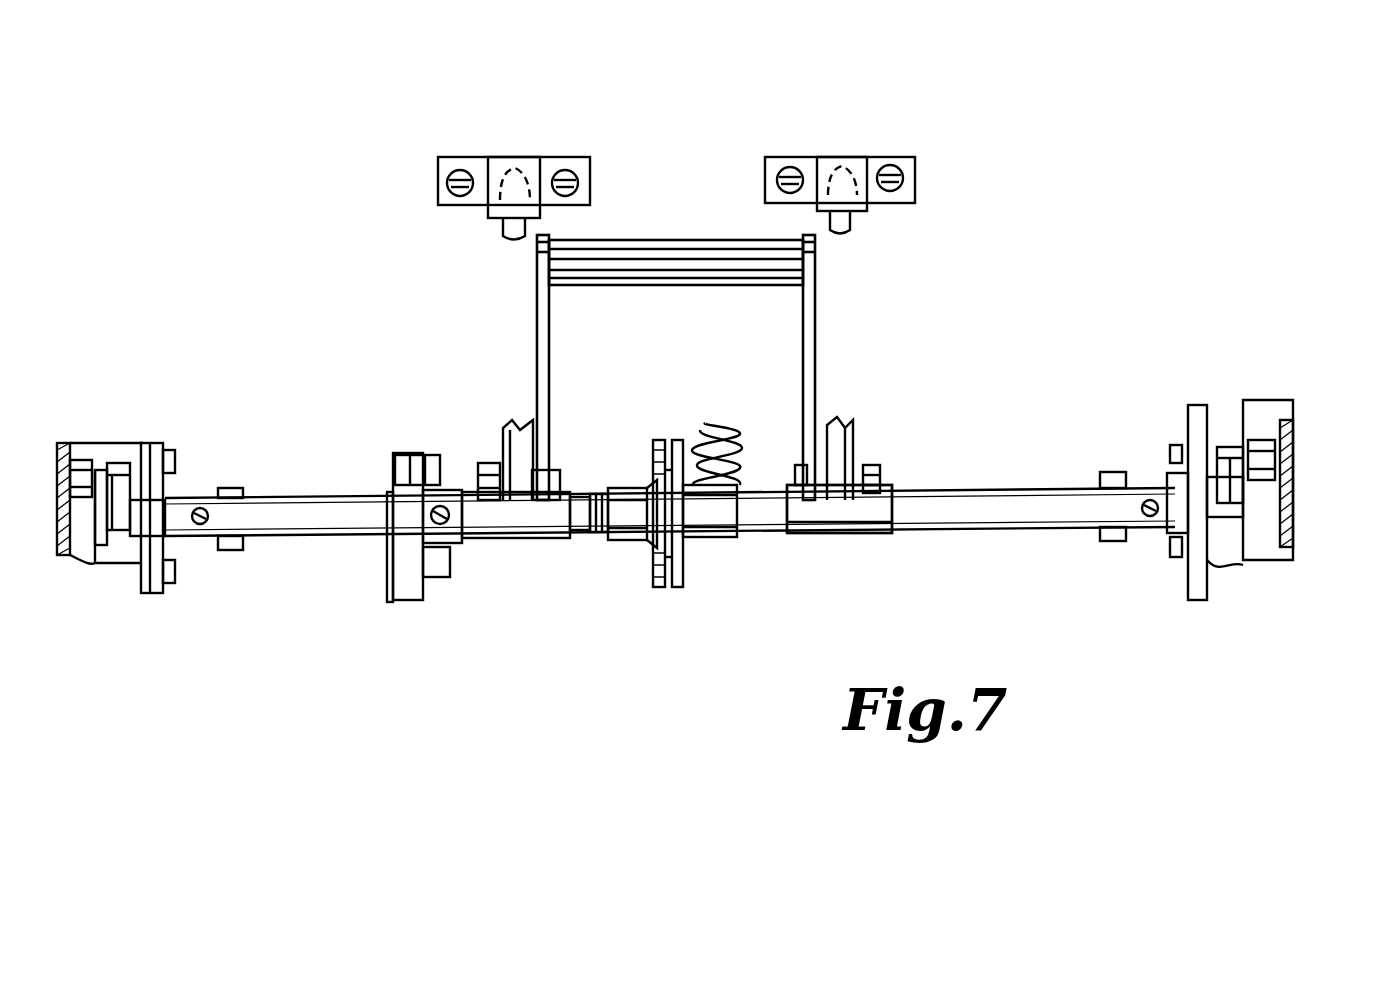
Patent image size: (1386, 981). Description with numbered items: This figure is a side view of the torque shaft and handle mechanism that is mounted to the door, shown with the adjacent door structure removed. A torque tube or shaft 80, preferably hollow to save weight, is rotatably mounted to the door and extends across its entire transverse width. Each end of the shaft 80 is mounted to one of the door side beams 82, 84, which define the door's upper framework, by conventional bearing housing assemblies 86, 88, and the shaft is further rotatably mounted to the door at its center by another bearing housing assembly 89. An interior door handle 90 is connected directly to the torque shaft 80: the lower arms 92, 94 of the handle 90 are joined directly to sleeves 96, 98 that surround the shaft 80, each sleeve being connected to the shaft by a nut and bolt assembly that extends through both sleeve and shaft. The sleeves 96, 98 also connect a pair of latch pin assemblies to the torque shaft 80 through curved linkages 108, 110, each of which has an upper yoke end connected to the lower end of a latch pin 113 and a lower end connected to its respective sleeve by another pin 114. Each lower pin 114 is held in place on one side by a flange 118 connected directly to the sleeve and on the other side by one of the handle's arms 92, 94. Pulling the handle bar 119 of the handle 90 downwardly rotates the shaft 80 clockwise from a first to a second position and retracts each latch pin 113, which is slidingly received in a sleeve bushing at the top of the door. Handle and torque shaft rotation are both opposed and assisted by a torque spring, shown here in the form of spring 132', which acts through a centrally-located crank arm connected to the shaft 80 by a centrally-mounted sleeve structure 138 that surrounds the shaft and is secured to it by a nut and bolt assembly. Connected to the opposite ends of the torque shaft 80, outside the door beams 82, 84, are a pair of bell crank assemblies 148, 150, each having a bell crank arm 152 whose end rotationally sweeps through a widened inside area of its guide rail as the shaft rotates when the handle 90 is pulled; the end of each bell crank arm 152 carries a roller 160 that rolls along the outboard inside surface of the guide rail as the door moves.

The torque shaft 80 is at (1025, 485).
The door side beam 82 is at (126, 570).
The door side beam 84 is at (1225, 560).
The bearing housing assembly 86 is at (165, 455).
The bearing housing assembly 88 is at (1188, 423).
The bearing housing assembly 89 is at (651, 540).
The interior door handle 90 is at (822, 362).
The lower arm 92 is at (537, 342).
The lower arm 94 is at (815, 402).
The sleeve 96 is at (525, 540).
The sleeve 98 is at (832, 534).
The linkage 108 is at (520, 442).
The linkage 110 is at (855, 440).
The latch pin 113 is at (578, 152).
The pin 114 is at (600, 538).
The flange 118 is at (478, 472).
The handle bar 119 is at (694, 252).
The spring 132' is at (732, 519).
The sleeve structure 138 is at (703, 540).
The bell crank assembly 148 is at (120, 447).
The bell crank assembly 150 is at (1232, 456).
The bell crank arm 152 is at (110, 540).
The roller 160 is at (82, 465).